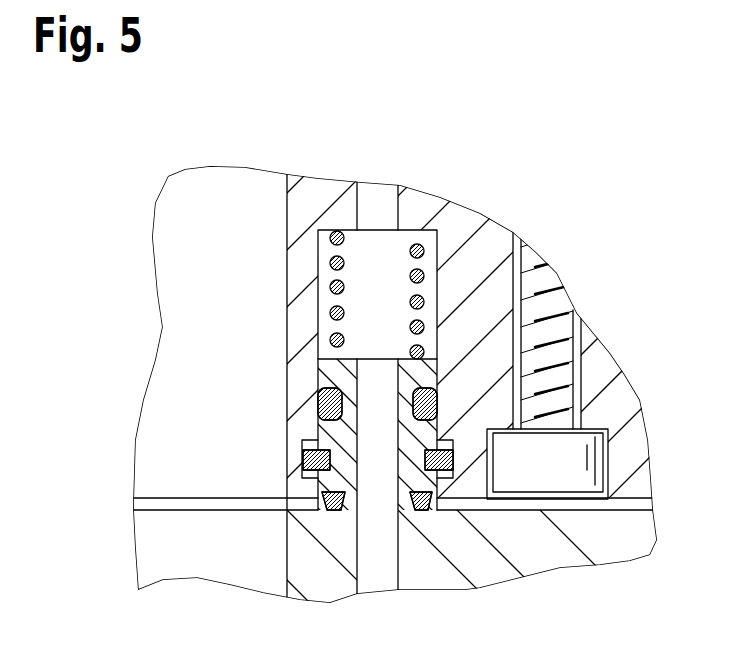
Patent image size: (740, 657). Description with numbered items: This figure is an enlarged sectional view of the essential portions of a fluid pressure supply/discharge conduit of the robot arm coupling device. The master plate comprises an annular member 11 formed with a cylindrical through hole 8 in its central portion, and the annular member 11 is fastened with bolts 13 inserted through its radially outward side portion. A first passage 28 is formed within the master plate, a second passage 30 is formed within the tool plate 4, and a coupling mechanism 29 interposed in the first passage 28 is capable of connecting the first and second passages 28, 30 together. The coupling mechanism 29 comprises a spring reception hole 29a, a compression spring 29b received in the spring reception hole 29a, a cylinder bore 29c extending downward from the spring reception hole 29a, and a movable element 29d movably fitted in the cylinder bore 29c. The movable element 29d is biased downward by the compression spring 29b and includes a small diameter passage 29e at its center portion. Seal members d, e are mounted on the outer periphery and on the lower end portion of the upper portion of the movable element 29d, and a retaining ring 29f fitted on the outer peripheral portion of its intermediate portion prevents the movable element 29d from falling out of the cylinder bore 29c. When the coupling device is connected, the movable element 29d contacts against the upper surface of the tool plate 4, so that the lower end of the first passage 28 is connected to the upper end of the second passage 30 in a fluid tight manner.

The tool plate 4 is at (300, 560).
The cylindrical through hole 8 is at (211, 272).
The annular member 11 is at (300, 215).
The bolt 13 is at (557, 360).
The first passage 28 is at (398, 202).
The coupling mechanism 29 is at (461, 297).
The spring reception hole 29a is at (320, 312).
The compression spring 29b is at (330, 288).
The cylinder bore 29c is at (327, 437).
The movable element 29d is at (343, 447).
The small diameter passage 29e is at (357, 488).
The retaining ring 29f is at (303, 458).
The second passage 30 is at (398, 562).
The seal member d is at (436, 407).
The seal member e is at (435, 498).